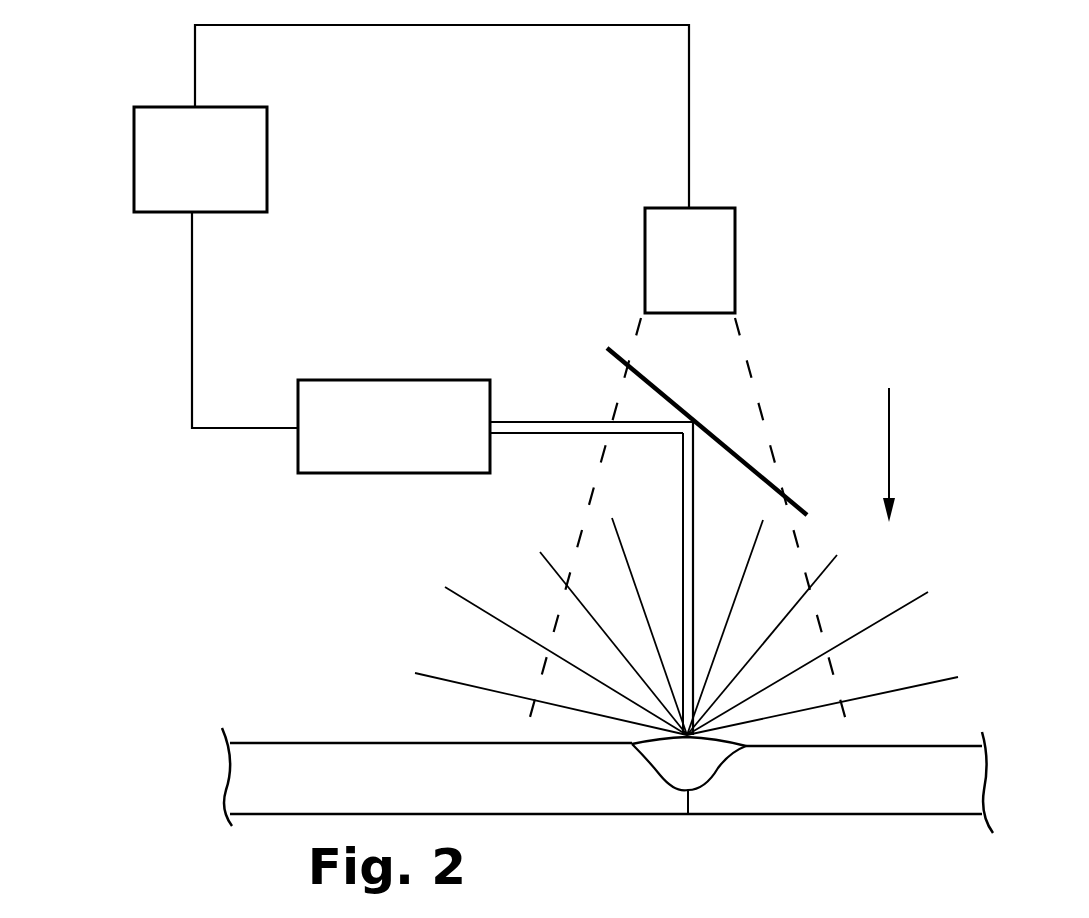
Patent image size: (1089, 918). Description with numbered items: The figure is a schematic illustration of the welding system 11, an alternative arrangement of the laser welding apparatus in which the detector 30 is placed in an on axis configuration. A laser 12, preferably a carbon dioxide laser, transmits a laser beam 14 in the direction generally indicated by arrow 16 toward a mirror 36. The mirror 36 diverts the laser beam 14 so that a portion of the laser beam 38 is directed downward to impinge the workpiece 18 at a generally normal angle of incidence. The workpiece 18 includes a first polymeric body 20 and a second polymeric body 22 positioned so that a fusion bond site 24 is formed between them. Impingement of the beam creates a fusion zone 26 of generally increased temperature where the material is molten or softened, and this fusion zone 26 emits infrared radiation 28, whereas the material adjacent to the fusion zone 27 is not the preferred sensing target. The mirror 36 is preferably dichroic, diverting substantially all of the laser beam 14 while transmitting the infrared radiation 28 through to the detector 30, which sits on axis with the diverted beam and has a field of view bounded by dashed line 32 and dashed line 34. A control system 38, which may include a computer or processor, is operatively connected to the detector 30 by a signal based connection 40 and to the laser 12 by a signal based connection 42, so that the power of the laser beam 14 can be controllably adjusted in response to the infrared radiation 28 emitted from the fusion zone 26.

The welding system 11 is at (942, 258).
The laser 12 is at (394, 426).
The laser beam 14 is at (560, 422).
The arrow 16 is at (889, 435).
The workpiece 18 is at (695, 860).
The first polymeric body 20 is at (568, 795).
The second polymeric body 22 is at (875, 802).
The fusion bond site 24 is at (683, 808).
The fusion zone 26 is at (698, 772).
The material adjacent to the fusion zone 27 is at (618, 741).
The infrared radiation 28 is at (920, 598).
The infrared radiation detector 30 is at (690, 260).
The dashed line 32 is at (762, 418).
The dashed line 34 is at (592, 505).
The mirror 36 is at (676, 408).
The control system 38 is at (682, 527).
The signal based connection 40 is at (689, 75).
The signal based connection 42 is at (190, 398).